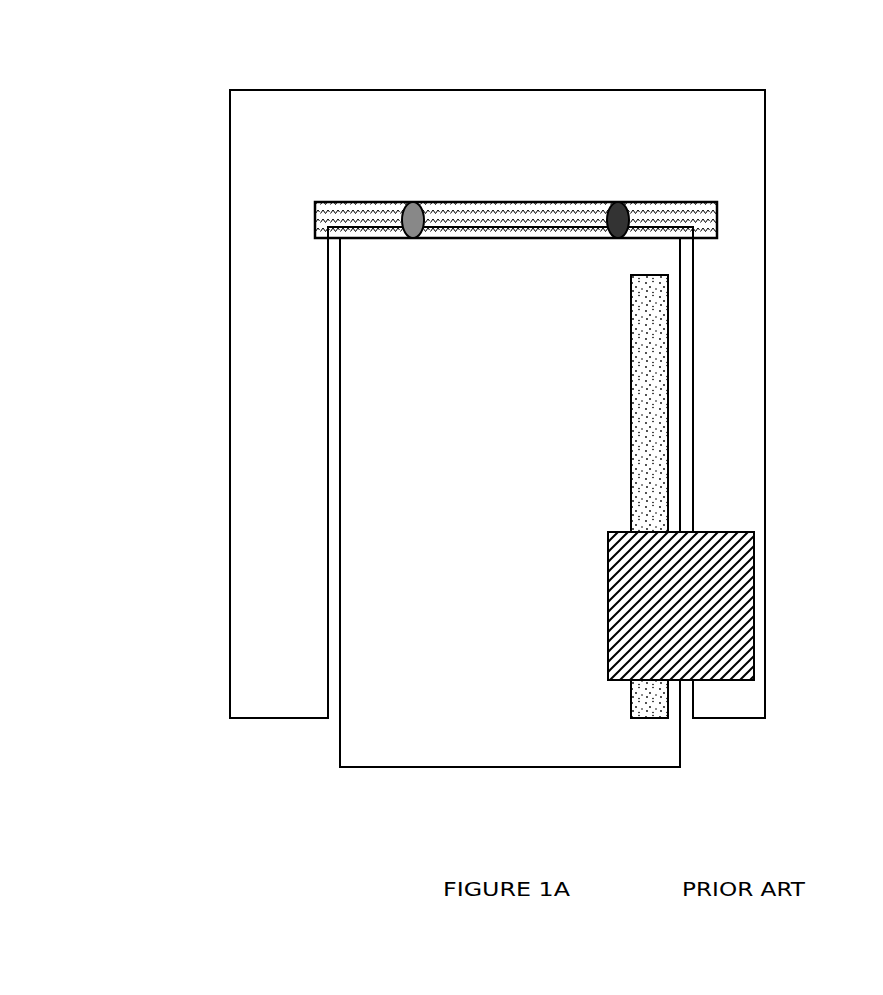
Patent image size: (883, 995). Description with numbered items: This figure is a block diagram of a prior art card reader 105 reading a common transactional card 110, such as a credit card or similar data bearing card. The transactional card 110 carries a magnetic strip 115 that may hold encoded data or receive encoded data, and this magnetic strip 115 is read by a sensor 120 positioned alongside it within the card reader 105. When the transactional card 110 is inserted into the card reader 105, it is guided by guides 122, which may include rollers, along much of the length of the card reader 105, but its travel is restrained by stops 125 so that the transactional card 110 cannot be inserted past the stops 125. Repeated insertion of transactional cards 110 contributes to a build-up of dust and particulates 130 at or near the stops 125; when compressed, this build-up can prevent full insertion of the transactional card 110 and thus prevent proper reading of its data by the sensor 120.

The card reader 105 is at (243, 497).
The transactional card 110 is at (355, 742).
The magnetic strip 115 is at (645, 385).
The sensor 120 is at (730, 567).
The guides 122 is at (680, 703).
The stops 125 is at (424, 188).
The dust and particulates 130 is at (718, 224).